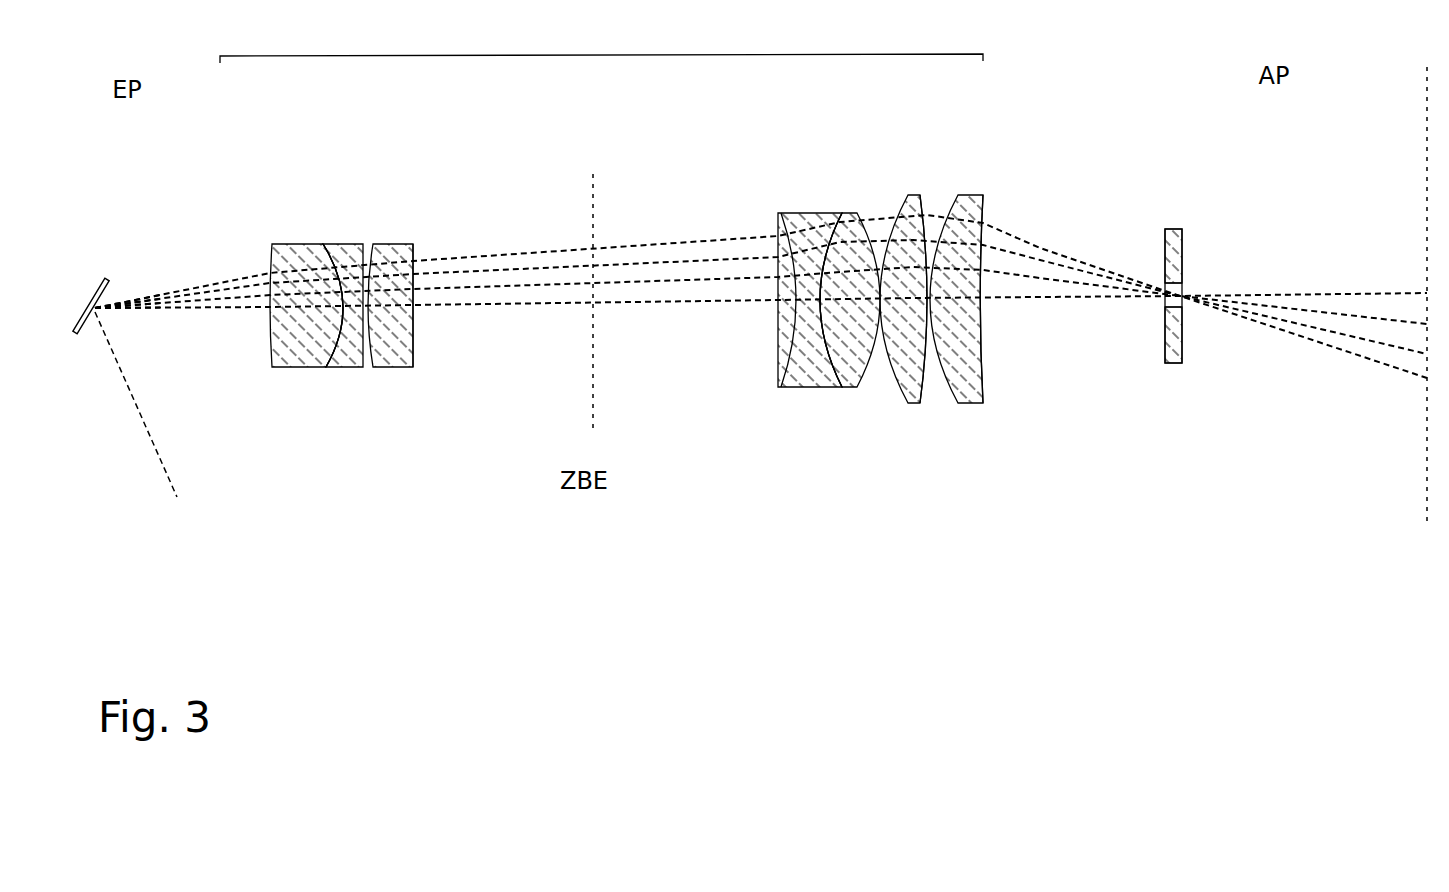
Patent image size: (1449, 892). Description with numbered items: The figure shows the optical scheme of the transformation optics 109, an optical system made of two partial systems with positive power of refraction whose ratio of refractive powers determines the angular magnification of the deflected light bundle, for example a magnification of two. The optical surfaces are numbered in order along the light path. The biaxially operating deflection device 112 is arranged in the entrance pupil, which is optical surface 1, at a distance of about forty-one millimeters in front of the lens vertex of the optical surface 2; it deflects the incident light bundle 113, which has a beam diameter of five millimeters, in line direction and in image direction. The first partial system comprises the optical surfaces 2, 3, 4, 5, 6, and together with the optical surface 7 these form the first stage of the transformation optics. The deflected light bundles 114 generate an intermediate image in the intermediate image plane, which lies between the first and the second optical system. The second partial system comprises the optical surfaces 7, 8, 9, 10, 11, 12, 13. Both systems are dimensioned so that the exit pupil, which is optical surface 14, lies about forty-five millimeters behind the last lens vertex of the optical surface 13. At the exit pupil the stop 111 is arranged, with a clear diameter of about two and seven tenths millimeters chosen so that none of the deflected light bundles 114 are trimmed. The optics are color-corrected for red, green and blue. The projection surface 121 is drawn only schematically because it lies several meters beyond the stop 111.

The optical surface 1 is at (92, 278).
The optical surface 2 is at (272, 247).
The optical surface 3 is at (340, 277).
The optical surface 4 is at (365, 297).
The optical surface 5 is at (372, 247).
The optical surface 6 is at (413, 247).
The optical surface 7 is at (778, 213).
The optical surface 8 is at (842, 213).
The optical surface 9 is at (857, 213).
The optical surface 10 is at (910, 195).
The optical surface 11 is at (921, 195).
The optical surface 12 is at (961, 195).
The optical surface 13 is at (985, 195).
The optical surface 14 is at (1192, 277).
The transformation optics 109 is at (601, 44).
The stop 111 is at (1180, 363).
The deflection device 112 is at (85, 332).
The incident light bundle 113 is at (147, 428).
The deflected light bundles 114 is at (195, 310).
The projection surface 121 is at (1425, 401).